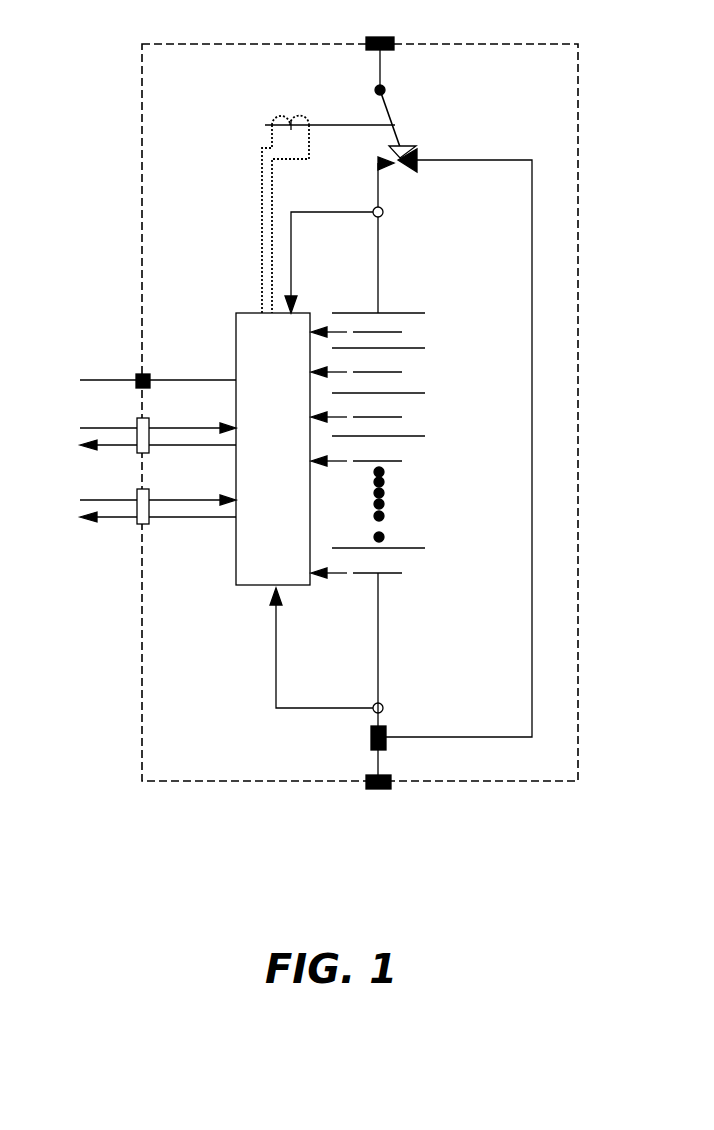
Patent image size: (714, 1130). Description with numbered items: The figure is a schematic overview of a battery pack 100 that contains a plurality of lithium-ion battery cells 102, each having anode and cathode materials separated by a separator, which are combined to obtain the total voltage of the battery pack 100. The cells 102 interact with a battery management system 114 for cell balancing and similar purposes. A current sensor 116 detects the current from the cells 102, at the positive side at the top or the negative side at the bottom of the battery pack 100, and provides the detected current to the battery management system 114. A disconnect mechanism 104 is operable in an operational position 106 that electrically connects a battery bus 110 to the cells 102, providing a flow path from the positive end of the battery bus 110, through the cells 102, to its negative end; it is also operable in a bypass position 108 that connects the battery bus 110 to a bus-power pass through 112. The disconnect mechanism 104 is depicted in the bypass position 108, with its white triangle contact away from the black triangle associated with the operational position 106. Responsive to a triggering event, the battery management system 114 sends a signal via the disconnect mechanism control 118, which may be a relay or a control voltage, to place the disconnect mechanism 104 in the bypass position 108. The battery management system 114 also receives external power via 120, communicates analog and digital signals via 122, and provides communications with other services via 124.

The battery pack 100 is at (561, 82).
The plurality of lithium-ion battery cells 102 is at (428, 415).
The disconnect mechanism 104 is at (385, 109).
The operational position 106 is at (378, 163).
The bypass position 108 is at (419, 154).
The battery bus 110 is at (395, 40).
The bus-power pass through 112 is at (532, 274).
The battery management system 114 is at (292, 358).
The current sensor 116 is at (291, 258).
The disconnect mechanism control 118 is at (262, 197).
The external power input 120 is at (141, 381).
The analog and digital signal communication 122 is at (141, 435).
The communications with other services 124 is at (141, 506).